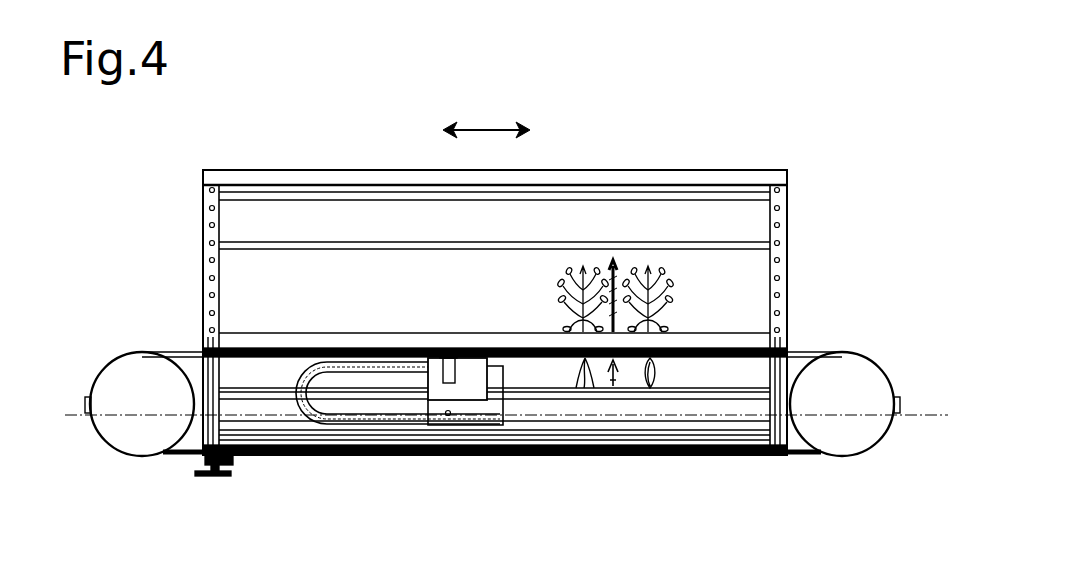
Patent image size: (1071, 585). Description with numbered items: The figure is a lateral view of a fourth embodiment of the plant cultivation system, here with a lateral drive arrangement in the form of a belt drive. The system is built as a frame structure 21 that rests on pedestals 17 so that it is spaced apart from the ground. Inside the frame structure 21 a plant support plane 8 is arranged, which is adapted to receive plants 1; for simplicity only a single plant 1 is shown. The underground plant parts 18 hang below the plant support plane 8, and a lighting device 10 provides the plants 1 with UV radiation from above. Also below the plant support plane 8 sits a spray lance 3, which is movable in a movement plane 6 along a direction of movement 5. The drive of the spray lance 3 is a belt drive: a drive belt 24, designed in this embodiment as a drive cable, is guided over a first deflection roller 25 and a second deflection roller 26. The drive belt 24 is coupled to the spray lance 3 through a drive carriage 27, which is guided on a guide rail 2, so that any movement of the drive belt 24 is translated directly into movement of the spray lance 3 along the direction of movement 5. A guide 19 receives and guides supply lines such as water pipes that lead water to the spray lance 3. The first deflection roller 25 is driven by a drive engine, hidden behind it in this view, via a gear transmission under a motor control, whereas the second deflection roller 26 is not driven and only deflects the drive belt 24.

The plant 1 is at (668, 285).
The guide rail 2 is at (633, 393).
The spray lance 3 is at (446, 425).
The direction of movement 5 is at (470, 128).
The movement plane 6 is at (942, 414).
The plant support plane 8 is at (228, 342).
The lighting device 10 is at (613, 197).
The pedestal 17 is at (215, 478).
The underground plant parts 18 is at (660, 383).
The guide 19 is at (300, 420).
The frame structure 21 is at (780, 200).
The drive belt 24 is at (793, 457).
The first deflection roller 25 is at (132, 442).
The second deflection roller 26 is at (855, 437).
The drive carriage 27 is at (487, 405).